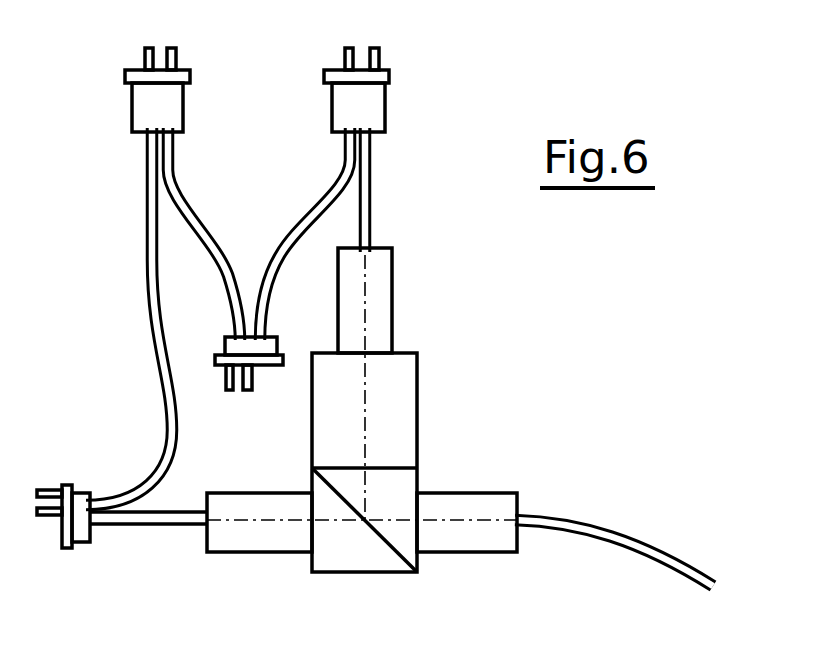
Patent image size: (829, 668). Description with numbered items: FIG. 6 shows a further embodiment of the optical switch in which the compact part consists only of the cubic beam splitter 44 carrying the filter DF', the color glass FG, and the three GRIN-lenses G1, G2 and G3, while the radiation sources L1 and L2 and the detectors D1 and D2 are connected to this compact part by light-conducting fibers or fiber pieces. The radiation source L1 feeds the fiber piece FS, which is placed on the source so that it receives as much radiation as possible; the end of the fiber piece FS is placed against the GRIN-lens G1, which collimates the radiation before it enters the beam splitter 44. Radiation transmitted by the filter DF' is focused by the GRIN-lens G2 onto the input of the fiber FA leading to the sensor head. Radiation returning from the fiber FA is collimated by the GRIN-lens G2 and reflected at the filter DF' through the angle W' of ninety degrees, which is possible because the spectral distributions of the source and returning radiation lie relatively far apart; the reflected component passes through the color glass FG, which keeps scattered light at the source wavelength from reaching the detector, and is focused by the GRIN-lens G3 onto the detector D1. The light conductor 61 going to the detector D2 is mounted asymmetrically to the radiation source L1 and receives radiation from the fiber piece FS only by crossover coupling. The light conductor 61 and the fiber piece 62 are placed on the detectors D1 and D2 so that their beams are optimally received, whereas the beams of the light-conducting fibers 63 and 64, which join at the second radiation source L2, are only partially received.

The detector D1 is at (378, 110).
The second detector D2 is at (152, 100).
The light conductor 61 is at (146, 271).
The fiber piece 62 is at (367, 222).
The light-conducting fiber 63 is at (197, 222).
The light-conducting fiber 64 is at (317, 213).
The radiation source L1 is at (80, 538).
The second radiation source L2 is at (262, 348).
The GRIN-lens G1 is at (262, 532).
The GRIN-lens G2 is at (483, 532).
The GRIN-lens G3 is at (378, 293).
The color glass filter FG is at (387, 427).
The cubic beam splitter 44 is at (398, 545).
The filter DF' is at (364, 546).
The angle W' is at (418, 488).
The fiber piece FS is at (162, 517).
The fiber FA is at (637, 542).